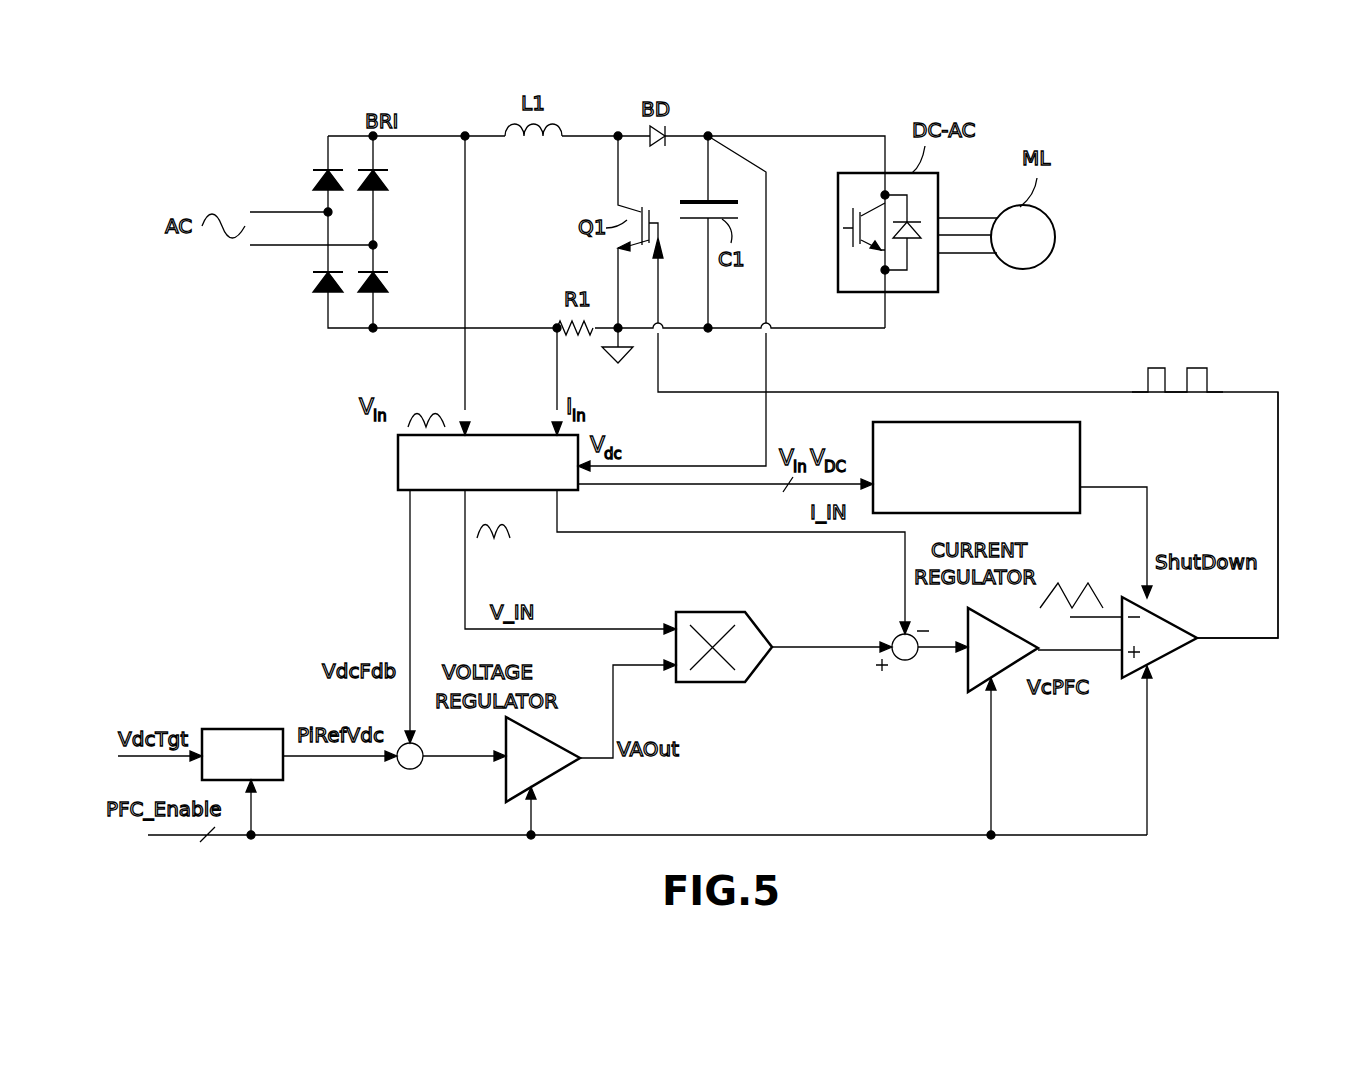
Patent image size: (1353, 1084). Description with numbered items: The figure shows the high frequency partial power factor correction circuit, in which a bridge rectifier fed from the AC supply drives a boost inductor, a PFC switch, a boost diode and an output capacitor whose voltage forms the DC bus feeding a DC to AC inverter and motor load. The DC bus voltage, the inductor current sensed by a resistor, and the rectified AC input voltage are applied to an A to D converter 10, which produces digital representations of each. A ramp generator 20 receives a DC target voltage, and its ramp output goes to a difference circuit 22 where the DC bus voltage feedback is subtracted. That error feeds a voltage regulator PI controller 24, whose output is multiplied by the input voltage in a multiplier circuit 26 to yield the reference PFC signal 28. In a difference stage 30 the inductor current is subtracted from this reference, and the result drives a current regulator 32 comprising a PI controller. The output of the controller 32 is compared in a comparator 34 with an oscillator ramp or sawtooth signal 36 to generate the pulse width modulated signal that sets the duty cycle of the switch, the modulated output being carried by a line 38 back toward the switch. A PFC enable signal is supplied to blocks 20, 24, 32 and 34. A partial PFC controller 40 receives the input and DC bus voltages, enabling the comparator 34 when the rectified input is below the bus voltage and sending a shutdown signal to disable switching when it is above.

The A to D converter 10 is at (398, 463).
The ramp generator 20 is at (235, 729).
The difference circuit 22 is at (421, 766).
The PI controller 24 is at (563, 774).
The multiplier circuit 26 is at (712, 612).
The reference PFC signal IREF_PFC 28 is at (810, 650).
The difference stage 30 is at (912, 660).
The current regulator 32 is at (1010, 676).
The comparator 34 is at (1165, 669).
The sawtooth signal 36 is at (1072, 598).
The PWM feedback line 38 is at (1278, 488).
The partial PFC controller 40 is at (1080, 450).